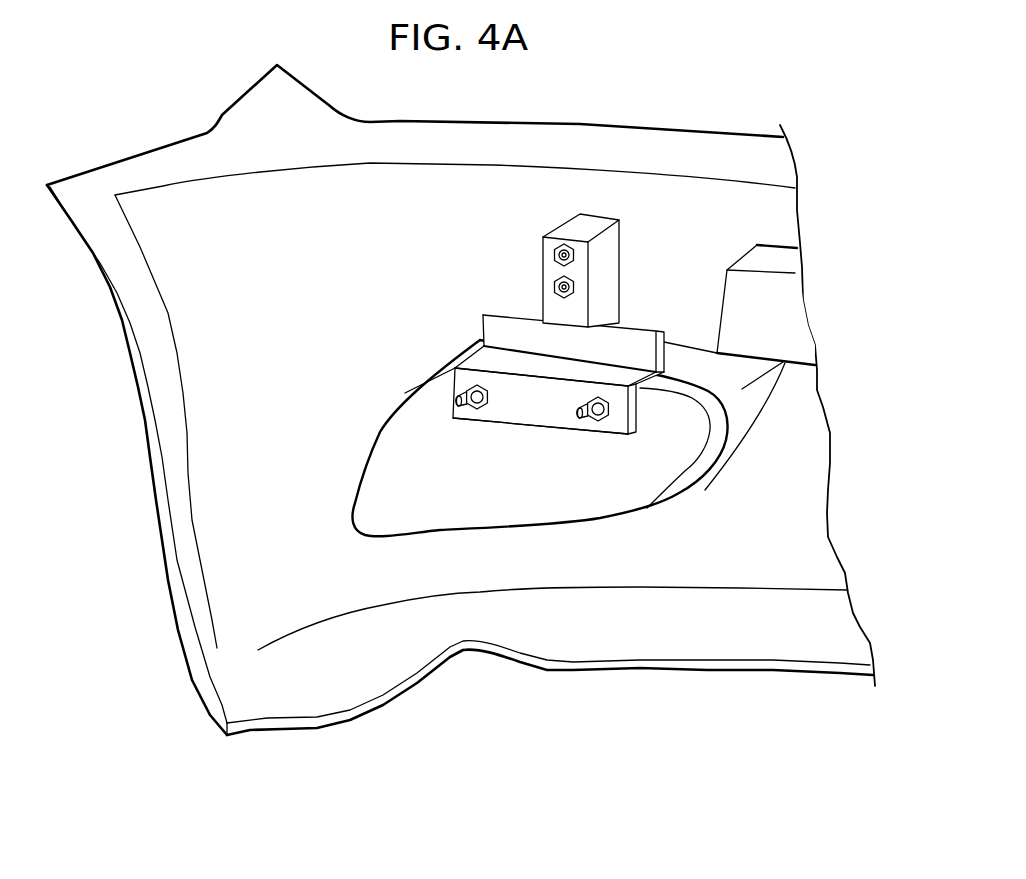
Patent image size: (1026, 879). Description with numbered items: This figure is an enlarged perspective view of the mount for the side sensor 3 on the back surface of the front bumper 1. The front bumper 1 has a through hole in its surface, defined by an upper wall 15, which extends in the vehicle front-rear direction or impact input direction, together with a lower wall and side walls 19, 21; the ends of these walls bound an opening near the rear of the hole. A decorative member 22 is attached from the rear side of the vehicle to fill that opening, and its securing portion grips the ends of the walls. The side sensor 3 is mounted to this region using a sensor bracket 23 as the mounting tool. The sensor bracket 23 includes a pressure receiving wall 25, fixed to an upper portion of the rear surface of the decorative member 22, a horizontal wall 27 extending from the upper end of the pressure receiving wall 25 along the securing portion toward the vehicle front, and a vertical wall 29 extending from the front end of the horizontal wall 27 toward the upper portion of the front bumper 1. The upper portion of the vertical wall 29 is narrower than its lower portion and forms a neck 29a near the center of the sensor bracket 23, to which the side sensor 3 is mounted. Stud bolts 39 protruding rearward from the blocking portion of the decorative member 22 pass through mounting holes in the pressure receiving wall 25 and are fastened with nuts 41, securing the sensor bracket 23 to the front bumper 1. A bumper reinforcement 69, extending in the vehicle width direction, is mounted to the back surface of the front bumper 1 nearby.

The front bumper 1 is at (395, 690).
The side sensor 3 is at (502, 187).
The upper wall 15 is at (687, 360).
The side wall 19 is at (719, 445).
The side wall 21 is at (498, 529).
The decorative member 22 is at (583, 490).
The sensor bracket 23 is at (521, 426).
The pressure receiving wall 25 is at (561, 405).
The horizontal wall 27 is at (488, 362).
The vertical wall 29 is at (666, 358).
The neck 29a is at (553, 308).
The stud bolt 39 is at (462, 405).
The nut 41 is at (471, 412).
The bumper reinforcement 69 is at (768, 263).